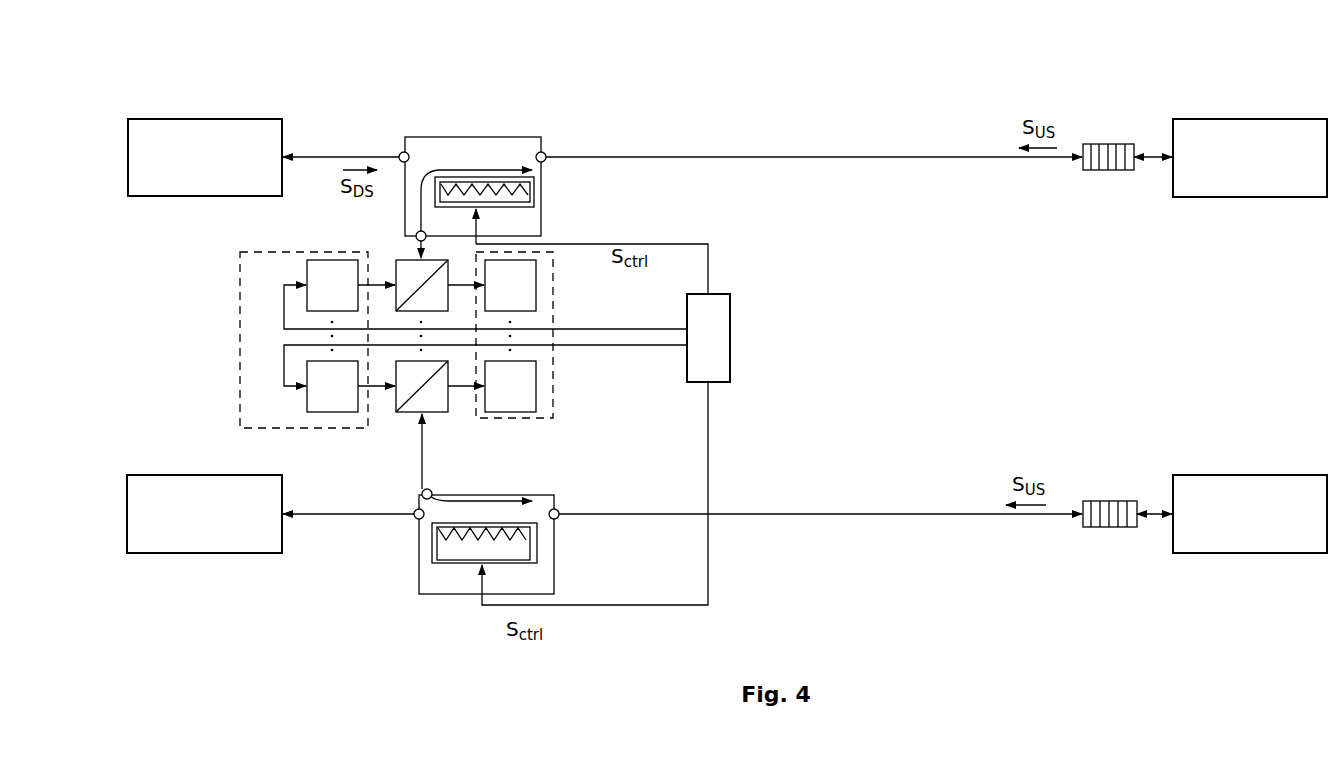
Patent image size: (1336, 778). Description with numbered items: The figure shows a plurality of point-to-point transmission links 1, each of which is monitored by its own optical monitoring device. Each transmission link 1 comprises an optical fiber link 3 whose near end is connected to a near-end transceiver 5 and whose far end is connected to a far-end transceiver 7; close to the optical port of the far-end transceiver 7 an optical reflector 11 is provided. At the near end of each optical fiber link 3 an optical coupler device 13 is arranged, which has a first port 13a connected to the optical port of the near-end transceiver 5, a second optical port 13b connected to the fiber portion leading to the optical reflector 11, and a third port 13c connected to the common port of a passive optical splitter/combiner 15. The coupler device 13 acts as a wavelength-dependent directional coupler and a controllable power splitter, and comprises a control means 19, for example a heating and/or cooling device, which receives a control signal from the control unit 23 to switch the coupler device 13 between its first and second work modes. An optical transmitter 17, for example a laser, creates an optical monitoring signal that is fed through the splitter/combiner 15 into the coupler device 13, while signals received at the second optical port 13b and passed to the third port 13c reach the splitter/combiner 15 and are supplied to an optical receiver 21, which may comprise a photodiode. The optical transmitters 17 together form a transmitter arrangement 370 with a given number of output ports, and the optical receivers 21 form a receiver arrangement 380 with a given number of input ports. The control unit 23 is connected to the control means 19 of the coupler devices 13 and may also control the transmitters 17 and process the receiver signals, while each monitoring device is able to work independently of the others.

The PtP transmission link 1 is at (982, 71).
The optical fiber link 3 is at (831, 151).
The near-end transceiver 5 is at (234, 124).
The far-end transceiver 7 is at (1259, 122).
The optical reflector 11 is at (1110, 149).
The optical coupler device 13 is at (448, 147).
The first port 13a is at (401, 154).
The second optical port 13b is at (416, 237).
The third port 13c is at (546, 152).
The passive optical splitter/combiner 15 is at (437, 291).
The optical transmitter 17 is at (314, 275).
The control means 19 is at (534, 192).
The optical receiver 21 is at (537, 275).
The control unit 23 is at (721, 312).
The transmitter arrangement 370 is at (341, 431).
The receiver arrangement 380 is at (557, 365).